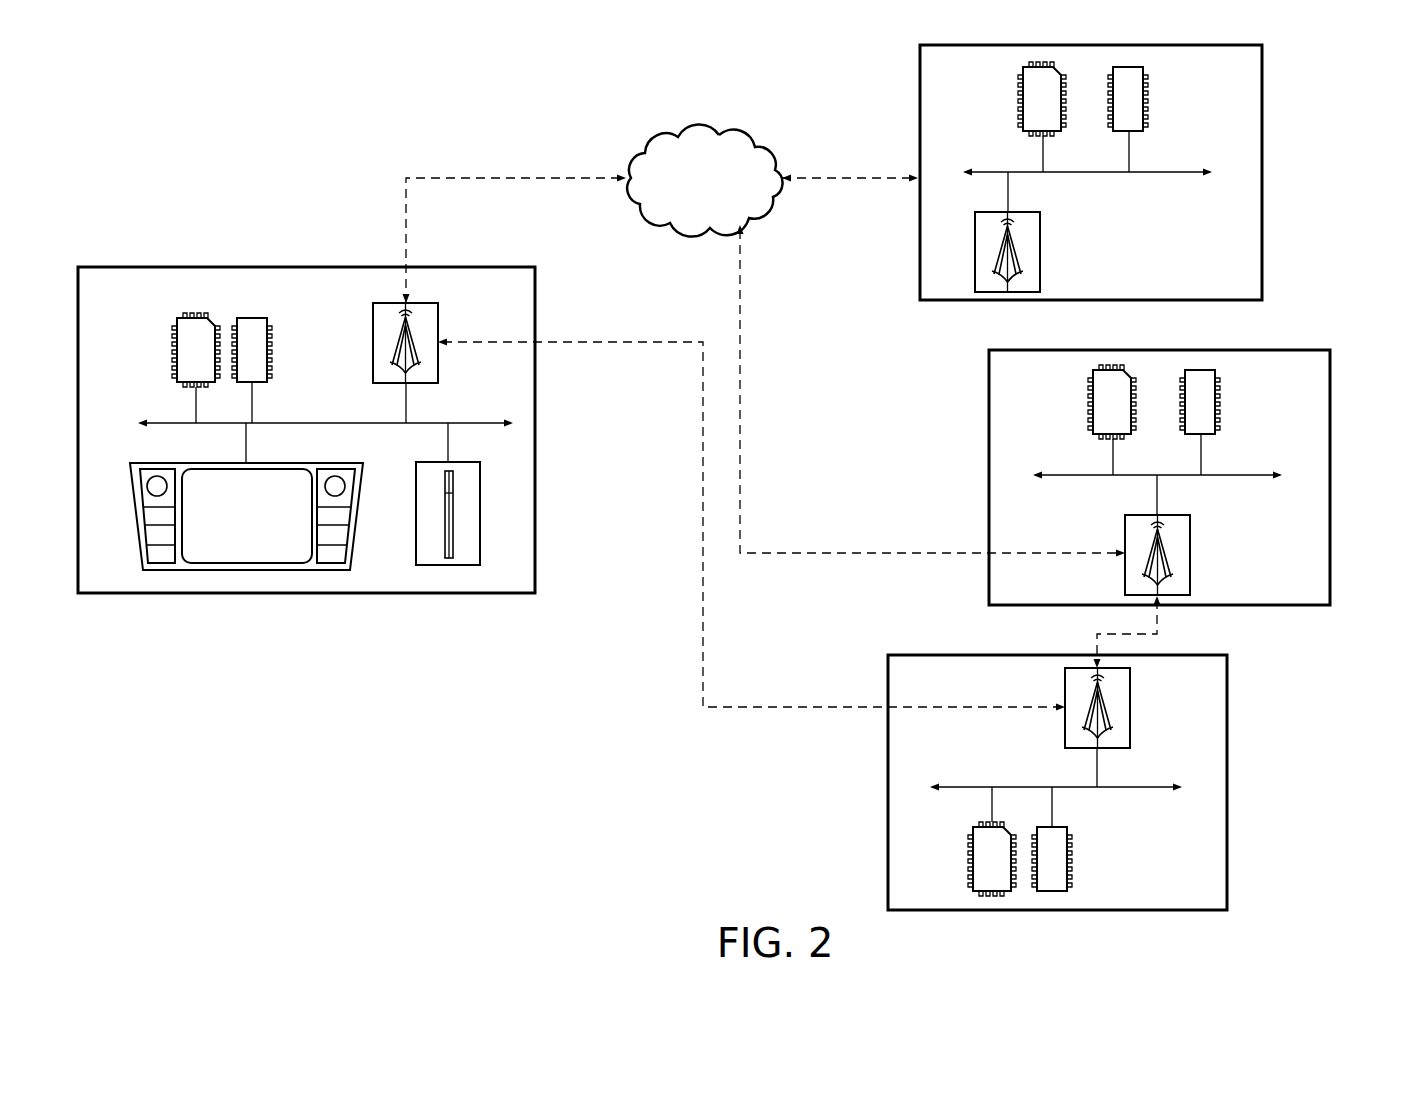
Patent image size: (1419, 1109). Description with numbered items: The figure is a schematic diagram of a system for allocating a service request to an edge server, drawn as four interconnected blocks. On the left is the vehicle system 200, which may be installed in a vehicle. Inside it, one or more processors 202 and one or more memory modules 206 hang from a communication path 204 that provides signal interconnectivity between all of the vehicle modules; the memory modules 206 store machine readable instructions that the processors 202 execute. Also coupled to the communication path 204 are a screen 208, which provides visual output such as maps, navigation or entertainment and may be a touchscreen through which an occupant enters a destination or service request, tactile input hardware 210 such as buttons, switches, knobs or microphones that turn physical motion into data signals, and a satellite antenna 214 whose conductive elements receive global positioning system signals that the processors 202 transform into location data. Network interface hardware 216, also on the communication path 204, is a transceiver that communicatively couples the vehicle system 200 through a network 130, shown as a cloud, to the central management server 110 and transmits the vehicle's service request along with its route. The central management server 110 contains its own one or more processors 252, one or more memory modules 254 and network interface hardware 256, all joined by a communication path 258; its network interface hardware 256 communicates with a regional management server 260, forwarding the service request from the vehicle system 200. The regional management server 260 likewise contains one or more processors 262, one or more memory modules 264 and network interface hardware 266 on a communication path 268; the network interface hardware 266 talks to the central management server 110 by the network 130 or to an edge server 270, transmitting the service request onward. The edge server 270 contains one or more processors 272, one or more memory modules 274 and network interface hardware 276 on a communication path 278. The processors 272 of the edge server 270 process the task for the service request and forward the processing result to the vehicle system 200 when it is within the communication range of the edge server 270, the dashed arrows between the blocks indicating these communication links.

The central management server 110 is at (1262, 172).
The network 130 is at (696, 131).
The vehicle system 200 is at (116, 267).
The one or more processors 202 is at (172, 332).
The communication path 204 is at (478, 422).
The one or more memory modules 206 is at (273, 332).
The screen 208 is at (233, 568).
The tactile input hardware 210 is at (336, 475).
The satellite antenna 214 is at (448, 567).
The network interface hardware 216 is at (440, 305).
The one or more processors 252 is at (1018, 85).
The one or more memory modules 254 is at (1149, 85).
The network interface hardware 256 is at (1043, 250).
The communication path 258 is at (1178, 171).
The regional management server 260 is at (1331, 477).
The one or more processors 262 is at (1088, 387).
The one or more memory modules 264 is at (1221, 387).
The network interface hardware 266 is at (1193, 553).
The communication path 268 is at (1250, 474).
The edge server 270 is at (1228, 783).
The one or more processors 272 is at (969, 842).
The one or more memory modules 274 is at (1070, 842).
The network interface hardware 276 is at (1133, 705).
The communication path 278 is at (978, 786).